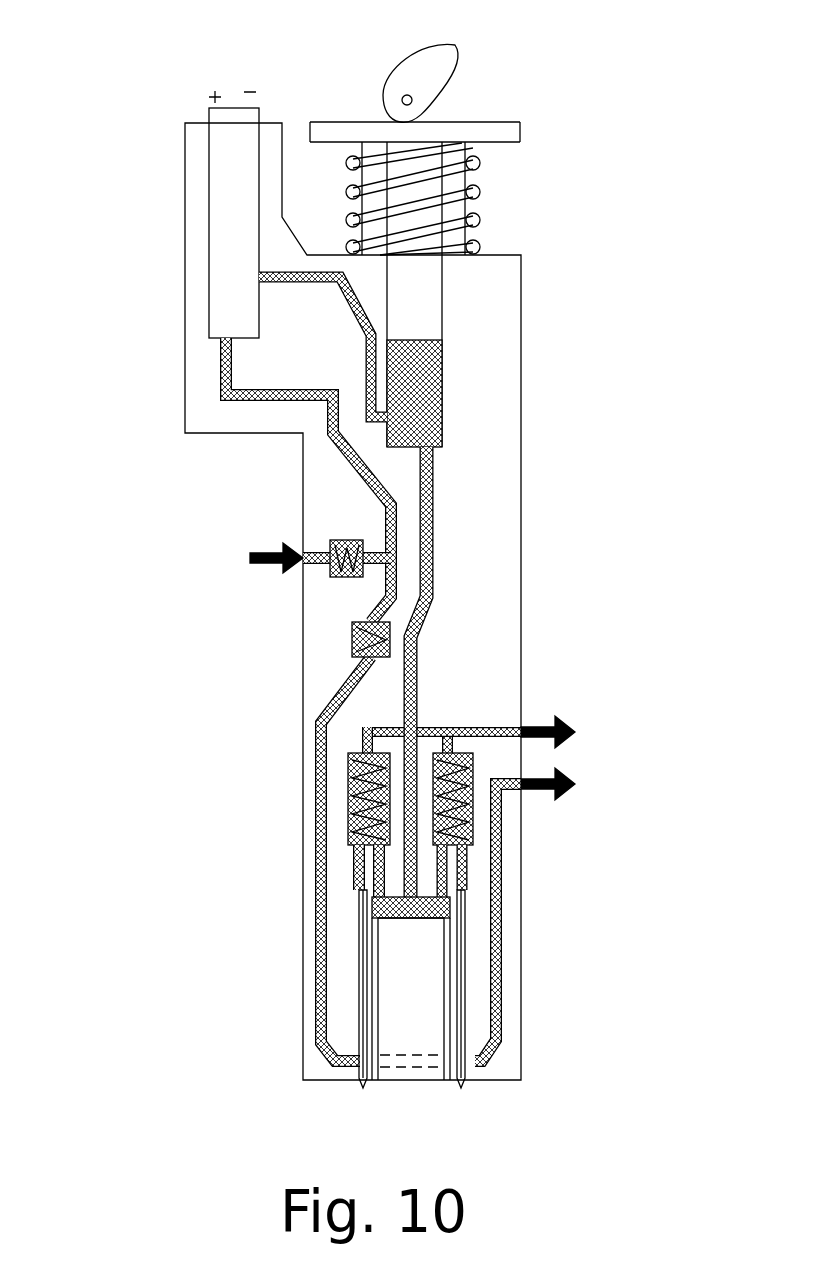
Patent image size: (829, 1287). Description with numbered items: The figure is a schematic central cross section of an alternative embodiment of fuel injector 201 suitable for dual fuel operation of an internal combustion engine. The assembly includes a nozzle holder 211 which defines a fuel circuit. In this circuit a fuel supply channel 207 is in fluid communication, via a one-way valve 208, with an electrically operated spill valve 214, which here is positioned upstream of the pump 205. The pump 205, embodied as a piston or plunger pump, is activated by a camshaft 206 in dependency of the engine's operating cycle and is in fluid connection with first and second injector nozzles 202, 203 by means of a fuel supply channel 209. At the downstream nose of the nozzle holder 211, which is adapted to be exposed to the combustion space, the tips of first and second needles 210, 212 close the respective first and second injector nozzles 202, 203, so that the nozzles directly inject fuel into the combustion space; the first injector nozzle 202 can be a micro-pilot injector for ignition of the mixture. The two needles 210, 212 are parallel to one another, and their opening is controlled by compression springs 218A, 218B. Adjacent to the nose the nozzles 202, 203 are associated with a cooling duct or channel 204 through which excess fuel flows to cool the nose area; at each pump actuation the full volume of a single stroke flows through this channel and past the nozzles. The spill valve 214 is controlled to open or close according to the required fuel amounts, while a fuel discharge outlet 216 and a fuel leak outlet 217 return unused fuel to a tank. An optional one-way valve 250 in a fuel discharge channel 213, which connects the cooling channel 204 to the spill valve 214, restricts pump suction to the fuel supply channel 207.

The fuel injector 201 is at (622, 507).
The first injector nozzle 202 is at (453, 1080).
The second injector nozzle 203 is at (365, 1080).
The cooling duct or channel 204 is at (402, 1050).
The pump 205 is at (415, 305).
The camshaft 206 is at (432, 68).
The fuel supply channel 207 is at (305, 563).
The one-way valve 208 is at (327, 547).
The fuel supply channel 209 is at (423, 603).
The first needle 210 is at (452, 868).
The nozzle holder 211 is at (507, 1057).
The second needle 212 is at (367, 870).
The fuel discharge channel 213 is at (317, 803).
The electrically operated spill valve 214 is at (235, 220).
The fuel discharge outlet 216 is at (572, 778).
The fuel leak outlet 217 is at (573, 718).
The compression spring 218A is at (470, 752).
The compression spring 218B is at (357, 807).
The one-way valve 250 is at (355, 643).